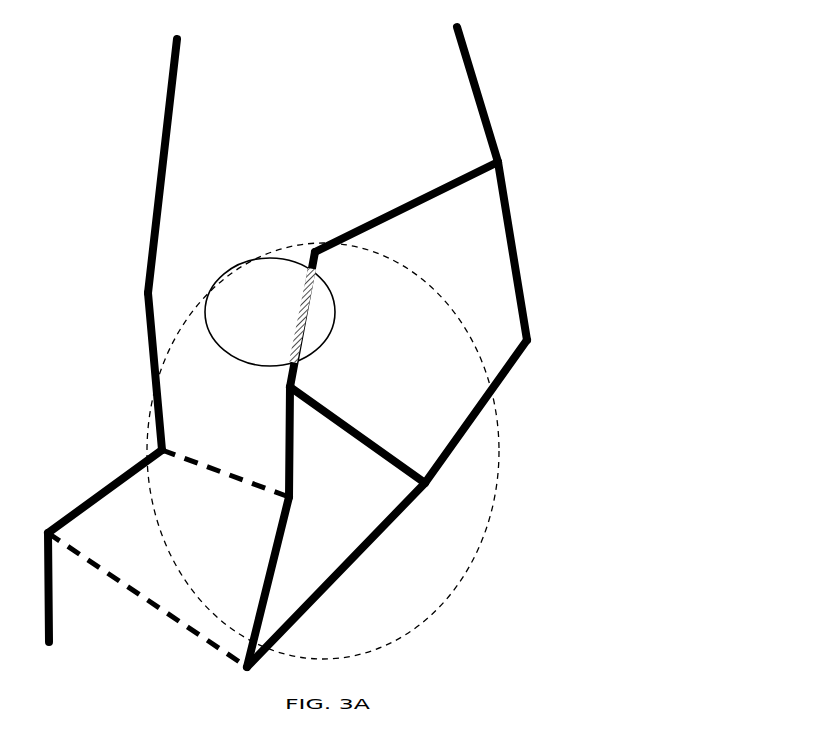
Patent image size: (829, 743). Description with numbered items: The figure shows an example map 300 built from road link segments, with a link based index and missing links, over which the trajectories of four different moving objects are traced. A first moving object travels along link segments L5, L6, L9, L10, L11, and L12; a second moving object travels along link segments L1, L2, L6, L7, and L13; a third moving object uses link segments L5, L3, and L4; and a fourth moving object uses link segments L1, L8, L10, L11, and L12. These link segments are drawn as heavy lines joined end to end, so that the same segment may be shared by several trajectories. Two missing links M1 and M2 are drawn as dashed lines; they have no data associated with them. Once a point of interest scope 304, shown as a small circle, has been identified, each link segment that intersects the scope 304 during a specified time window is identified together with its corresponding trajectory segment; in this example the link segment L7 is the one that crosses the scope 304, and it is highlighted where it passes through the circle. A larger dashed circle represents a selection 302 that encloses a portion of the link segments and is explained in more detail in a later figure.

The map 300 is at (641, 107).
The selection 302 is at (500, 498).
The scope 304 is at (226, 354).
The link segment L1 is at (45, 602).
The link segment L2 is at (82, 502).
The link segment L3 is at (147, 340).
The link segment L4 is at (157, 155).
The link segment L5 is at (255, 603).
The link segment L6 is at (284, 452).
The link segment L7 is at (320, 268).
The link segment L8 is at (345, 565).
The link segment L9 is at (332, 408).
The link segment L10 is at (448, 447).
The link segment L11 is at (520, 262).
The link segment L12 is at (484, 97).
The link segment L13 is at (452, 180).
The missing link M1 is at (145, 603).
The missing link M2 is at (234, 479).